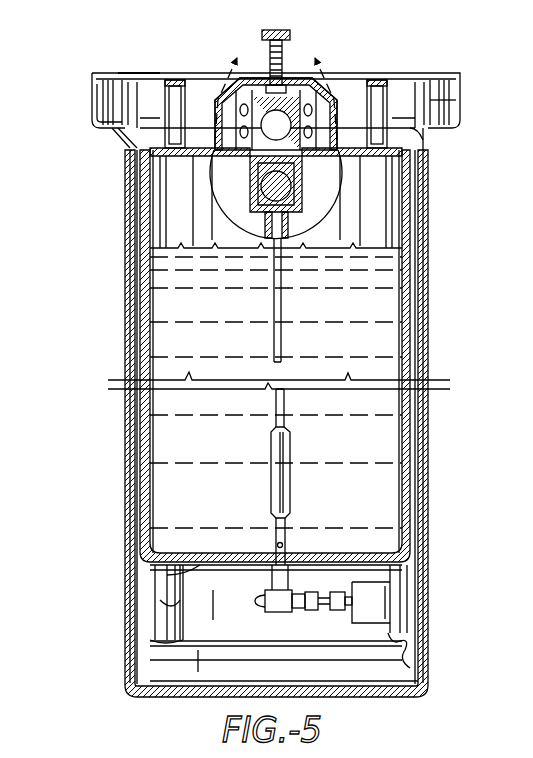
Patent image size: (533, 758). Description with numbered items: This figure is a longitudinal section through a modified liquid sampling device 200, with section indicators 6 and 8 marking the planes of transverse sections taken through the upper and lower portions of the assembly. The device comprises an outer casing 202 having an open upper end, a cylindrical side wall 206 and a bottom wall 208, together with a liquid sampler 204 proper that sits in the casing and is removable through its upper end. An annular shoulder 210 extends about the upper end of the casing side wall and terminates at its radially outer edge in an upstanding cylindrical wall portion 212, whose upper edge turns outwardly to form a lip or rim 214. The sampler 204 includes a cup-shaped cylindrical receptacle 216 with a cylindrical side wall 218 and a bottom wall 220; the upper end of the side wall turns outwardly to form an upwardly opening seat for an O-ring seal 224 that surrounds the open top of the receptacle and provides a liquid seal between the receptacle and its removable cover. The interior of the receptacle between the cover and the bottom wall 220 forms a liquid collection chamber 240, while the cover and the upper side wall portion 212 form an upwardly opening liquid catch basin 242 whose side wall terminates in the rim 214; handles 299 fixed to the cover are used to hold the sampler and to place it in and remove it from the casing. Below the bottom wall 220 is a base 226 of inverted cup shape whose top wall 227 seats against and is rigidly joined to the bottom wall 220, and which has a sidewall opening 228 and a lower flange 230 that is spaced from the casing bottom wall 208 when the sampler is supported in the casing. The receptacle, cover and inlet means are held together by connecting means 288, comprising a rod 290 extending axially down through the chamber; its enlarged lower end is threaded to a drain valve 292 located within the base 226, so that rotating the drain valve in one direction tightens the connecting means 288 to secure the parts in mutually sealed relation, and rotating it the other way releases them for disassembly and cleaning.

The section line 8- 8 is at (122, 56).
The lip or rim 214 is at (160, 73).
The handles 299 is at (172, 80).
The section line 6- 6 is at (276, 133).
The liquid sampler 204 is at (395, 98).
The upstanding cylindrical wall portion 212 is at (95, 108).
The annular shoulder 210 is at (115, 135).
The liquid catch basin 242 is at (440, 100).
The O-ring seal 224 is at (428, 150).
The liquid sampling device 200 is at (125, 268).
The liquid collection chamber 240 is at (172, 302).
The rod 290 is at (284, 300).
The connecting means 288 is at (270, 403).
The cylindrical side wall 206 is at (128, 468).
The cup-shaped cylindrical receptacle 216 is at (140, 497).
The cylindrical side wall 218 is at (150, 525).
The bottom wall 220 is at (148, 552).
The top wall 227 is at (190, 585).
The base 226 is at (165, 610).
The outer casing 202 is at (125, 688).
The bottom wall 208 is at (208, 697).
The drain valve 292 is at (280, 618).
The sidewall opening 228 is at (378, 600).
The lower flange 230 is at (408, 650).